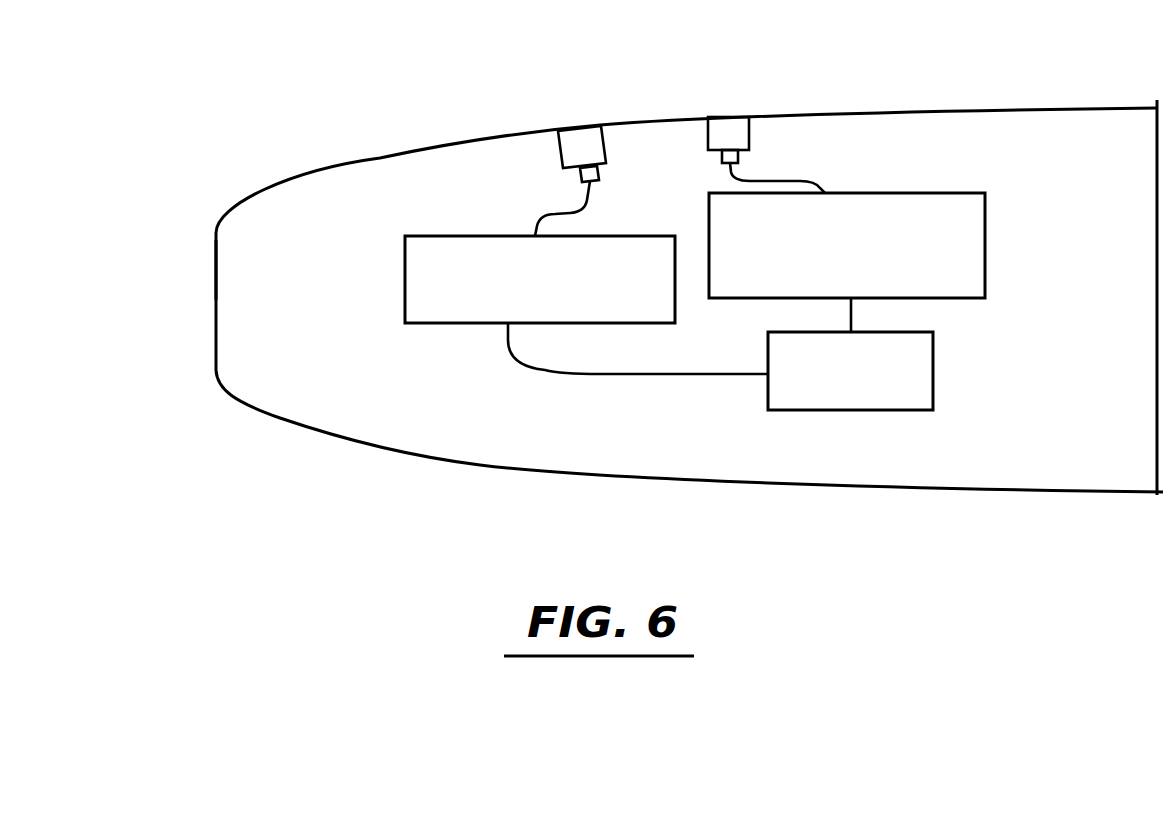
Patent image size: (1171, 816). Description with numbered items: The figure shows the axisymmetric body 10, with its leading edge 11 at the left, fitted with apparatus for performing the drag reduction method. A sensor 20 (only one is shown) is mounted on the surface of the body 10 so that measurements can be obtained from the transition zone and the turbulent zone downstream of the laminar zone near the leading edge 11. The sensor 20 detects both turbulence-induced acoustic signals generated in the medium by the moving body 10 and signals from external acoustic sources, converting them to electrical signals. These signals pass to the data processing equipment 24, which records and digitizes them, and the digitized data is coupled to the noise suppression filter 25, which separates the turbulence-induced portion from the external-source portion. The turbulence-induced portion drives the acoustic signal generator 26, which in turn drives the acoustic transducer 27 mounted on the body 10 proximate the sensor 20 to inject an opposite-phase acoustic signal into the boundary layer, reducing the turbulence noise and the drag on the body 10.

The body 10 is at (478, 470).
The leading edge 11 is at (210, 237).
The sensor 20 is at (580, 127).
The data processing equipment 24 is at (586, 305).
The noise suppression filter 25 is at (850, 371).
The acoustic signal generator 26 is at (847, 262).
The acoustic transducer 27 is at (728, 115).